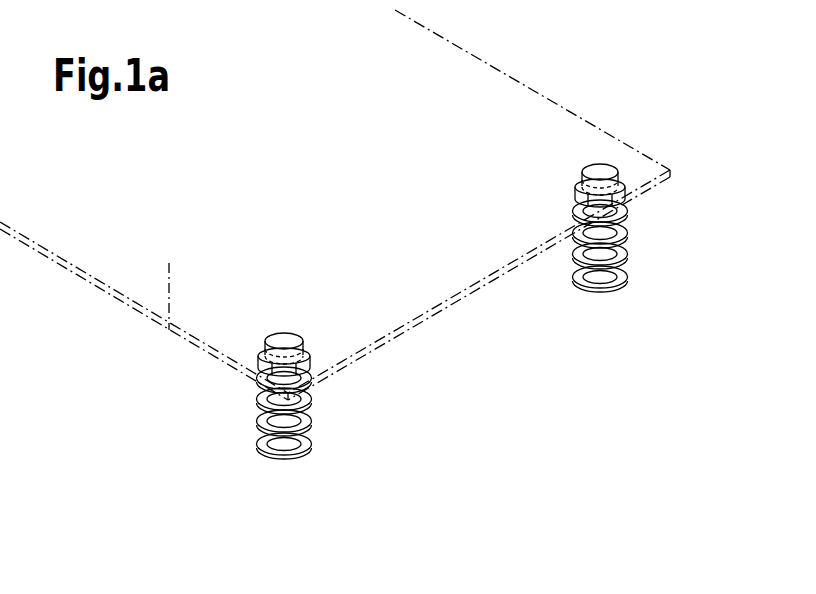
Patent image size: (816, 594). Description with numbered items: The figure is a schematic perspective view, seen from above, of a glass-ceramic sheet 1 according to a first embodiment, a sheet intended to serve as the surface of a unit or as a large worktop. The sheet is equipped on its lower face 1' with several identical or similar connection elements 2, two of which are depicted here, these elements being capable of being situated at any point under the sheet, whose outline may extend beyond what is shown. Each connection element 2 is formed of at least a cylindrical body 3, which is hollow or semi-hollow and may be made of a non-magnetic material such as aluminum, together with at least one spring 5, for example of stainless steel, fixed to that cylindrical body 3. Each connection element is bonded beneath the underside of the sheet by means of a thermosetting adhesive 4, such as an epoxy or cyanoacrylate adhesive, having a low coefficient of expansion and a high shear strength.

The glass-ceramic sheet 1 is at (335, 205).
The lower face 1' is at (115, 308).
The connection element 2 is at (245, 415).
The cylindrical body 3 is at (293, 420).
The thermosetting adhesive 4 is at (600, 172).
The spring 5 is at (280, 453).